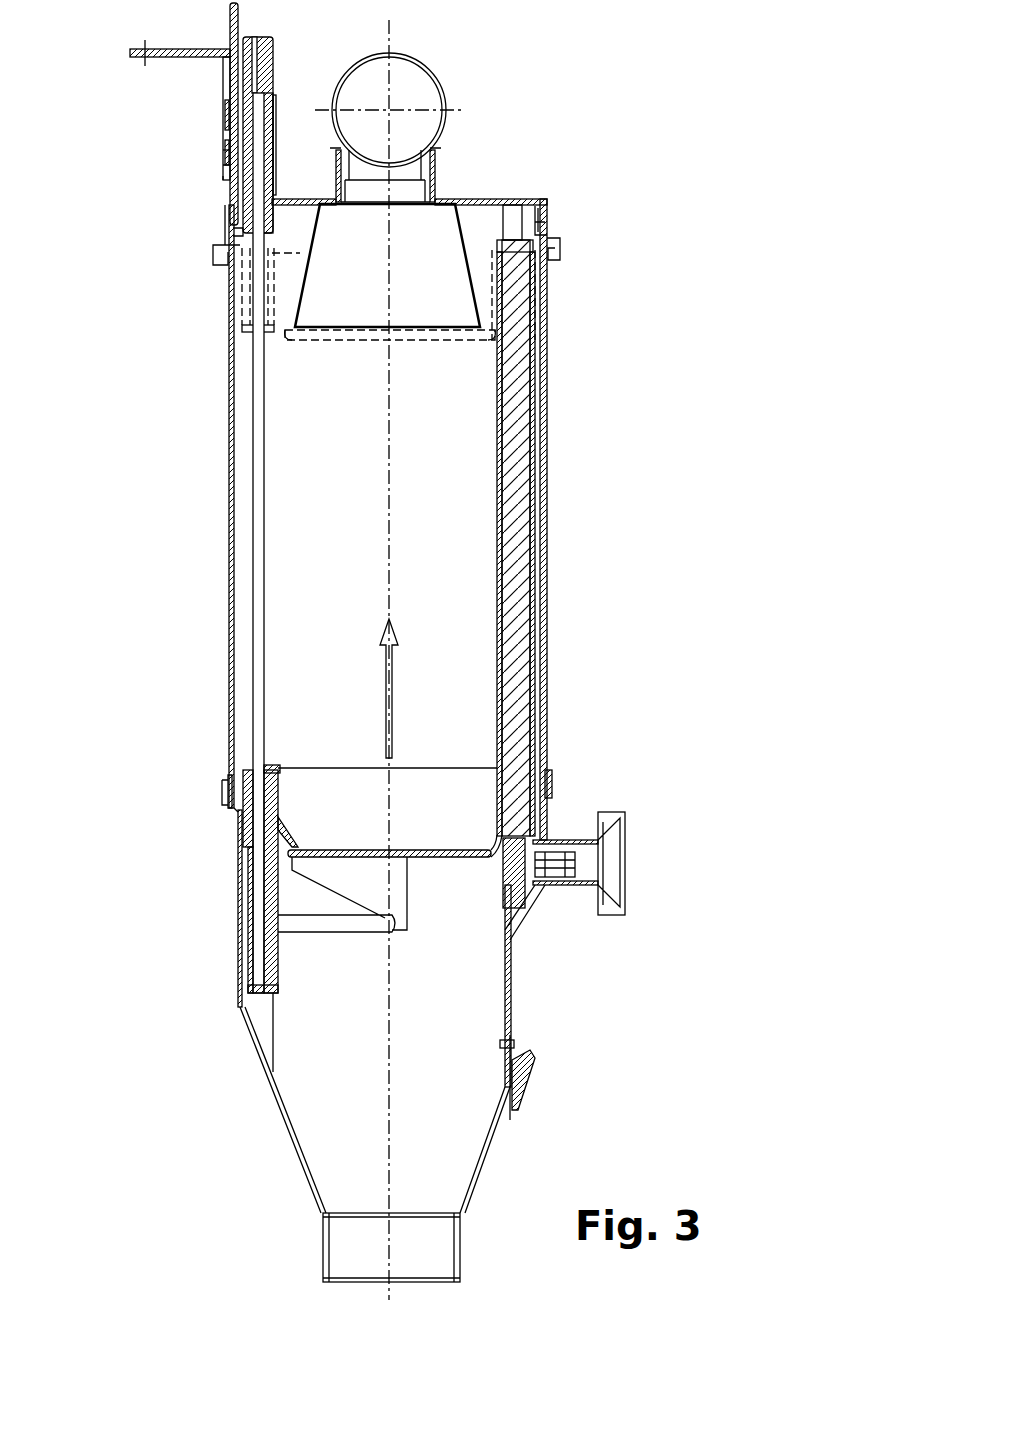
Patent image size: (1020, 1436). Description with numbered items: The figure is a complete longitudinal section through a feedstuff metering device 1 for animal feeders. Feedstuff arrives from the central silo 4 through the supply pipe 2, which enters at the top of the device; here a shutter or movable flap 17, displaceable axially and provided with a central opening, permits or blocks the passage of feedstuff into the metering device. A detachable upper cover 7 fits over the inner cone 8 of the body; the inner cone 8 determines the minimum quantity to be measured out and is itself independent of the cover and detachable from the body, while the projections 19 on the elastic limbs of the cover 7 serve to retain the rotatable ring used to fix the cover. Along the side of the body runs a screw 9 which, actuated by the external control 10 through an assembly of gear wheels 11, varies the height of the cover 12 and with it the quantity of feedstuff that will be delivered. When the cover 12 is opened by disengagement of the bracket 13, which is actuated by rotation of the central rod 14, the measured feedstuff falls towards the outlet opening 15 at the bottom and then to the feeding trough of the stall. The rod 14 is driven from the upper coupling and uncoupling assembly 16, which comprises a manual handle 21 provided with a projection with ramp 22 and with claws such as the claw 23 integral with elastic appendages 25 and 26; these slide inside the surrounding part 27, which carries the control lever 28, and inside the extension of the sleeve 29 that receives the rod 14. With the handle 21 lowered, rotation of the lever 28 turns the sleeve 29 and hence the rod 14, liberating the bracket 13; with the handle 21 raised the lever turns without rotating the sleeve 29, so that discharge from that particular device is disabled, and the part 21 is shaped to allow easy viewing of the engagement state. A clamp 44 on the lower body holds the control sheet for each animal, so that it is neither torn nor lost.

The metering device 1 is at (560, 455).
The pipe 2 is at (432, 75).
The central silo 4 is at (225, 153).
The detachable upper cover 7 is at (528, 196).
The inner cone 8 is at (473, 297).
The screw 9 is at (527, 580).
The external control 10 is at (605, 812).
The assembly of gear wheels 11 is at (542, 880).
The cover 12 is at (457, 847).
The bracket 13 is at (390, 927).
The rod 14 is at (260, 553).
The outlet opening 15 is at (558, 243).
The coupling and uncoupling assembly 16 is at (280, 100).
The shutter or movable flap 17 is at (422, 168).
The projections 19 is at (548, 233).
The manual handle 21 is at (230, 22).
The projection with ramp 22 is at (227, 88).
The claw 23 is at (225, 110).
The elastic appendage 25 is at (225, 132).
The elastic appendage 26 is at (225, 163).
The surrounding part 27 is at (274, 54).
The control lever 28 is at (173, 52).
The sleeve 29 is at (265, 168).
The clamp 44 is at (540, 1075).